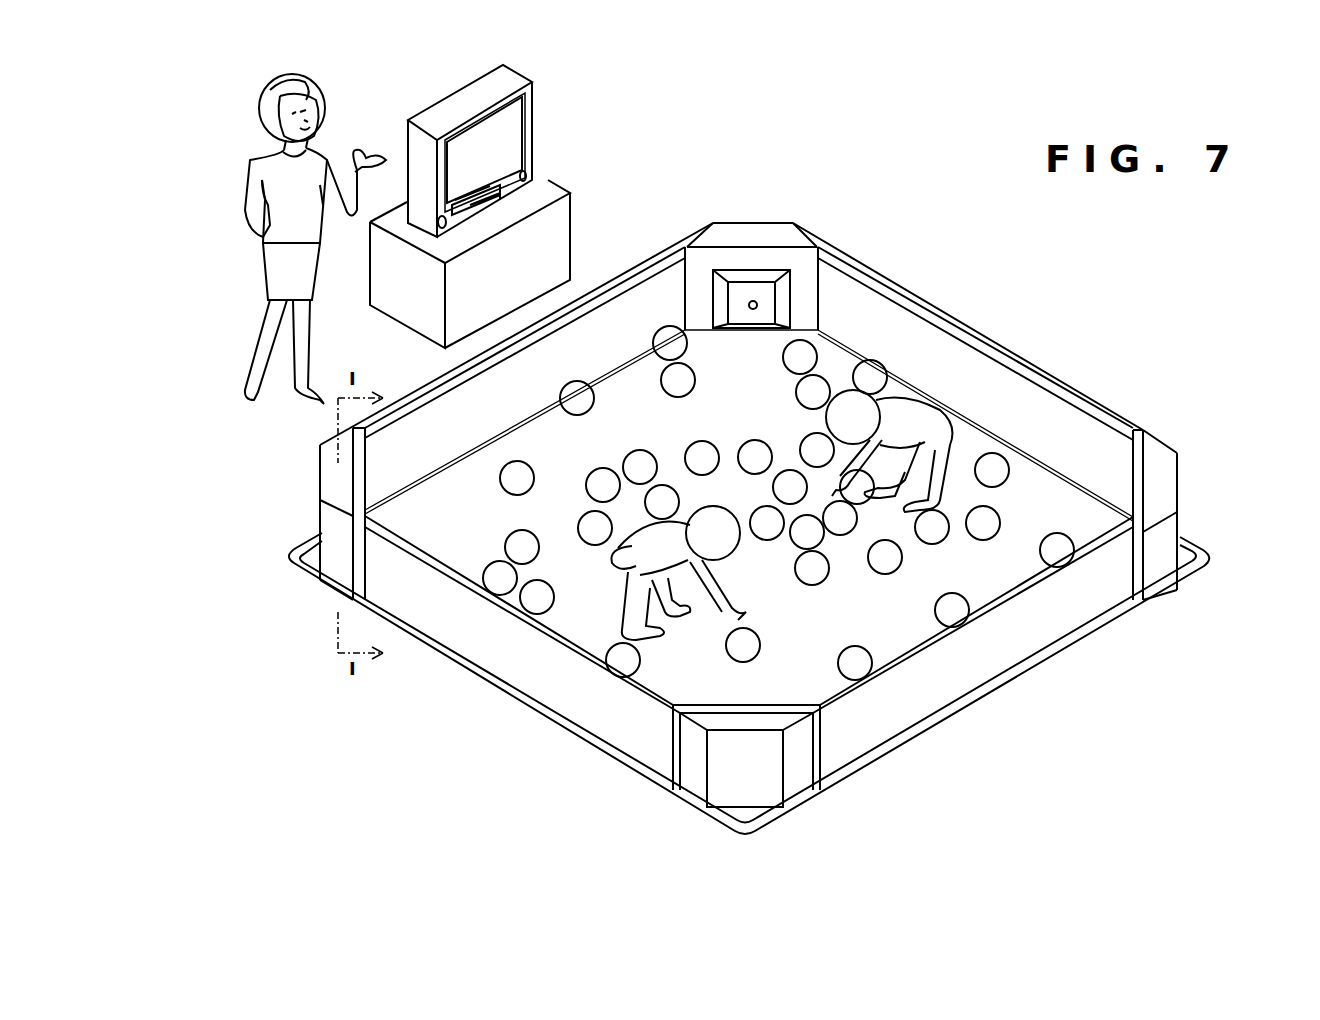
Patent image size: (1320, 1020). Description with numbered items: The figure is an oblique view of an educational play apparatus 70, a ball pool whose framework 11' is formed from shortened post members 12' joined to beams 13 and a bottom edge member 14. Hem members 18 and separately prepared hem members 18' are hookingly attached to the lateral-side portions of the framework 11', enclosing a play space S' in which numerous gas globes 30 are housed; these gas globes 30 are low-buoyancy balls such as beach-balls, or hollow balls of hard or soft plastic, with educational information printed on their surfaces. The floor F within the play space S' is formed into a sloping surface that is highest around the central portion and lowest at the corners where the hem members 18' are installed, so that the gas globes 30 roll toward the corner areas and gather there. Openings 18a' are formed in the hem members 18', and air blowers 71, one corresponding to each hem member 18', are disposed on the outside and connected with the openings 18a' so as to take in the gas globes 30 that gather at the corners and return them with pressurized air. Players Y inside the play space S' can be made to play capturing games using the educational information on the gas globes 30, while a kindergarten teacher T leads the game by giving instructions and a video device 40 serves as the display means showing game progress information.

The play apparatus 70 is at (1076, 237).
The air blowers 71 is at (727, 228).
The hem members 18 is at (731, 490).
The hem members 18' is at (785, 254).
The openings 18a' is at (769, 253).
The bottom edge member 14 is at (1078, 636).
The beams 13 is at (950, 632).
The post members 12' is at (795, 759).
The framework 11' is at (1142, 380).
The gas globes 30 is at (697, 387).
The video device 40 is at (545, 142).
The kindergarten teacher T is at (235, 156).
The players Y is at (722, 584).
The floor F is at (466, 526).
The play space S' is at (1050, 357).